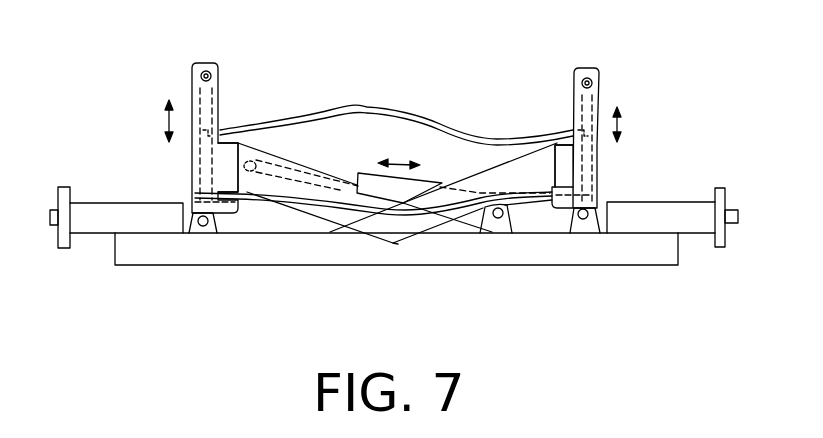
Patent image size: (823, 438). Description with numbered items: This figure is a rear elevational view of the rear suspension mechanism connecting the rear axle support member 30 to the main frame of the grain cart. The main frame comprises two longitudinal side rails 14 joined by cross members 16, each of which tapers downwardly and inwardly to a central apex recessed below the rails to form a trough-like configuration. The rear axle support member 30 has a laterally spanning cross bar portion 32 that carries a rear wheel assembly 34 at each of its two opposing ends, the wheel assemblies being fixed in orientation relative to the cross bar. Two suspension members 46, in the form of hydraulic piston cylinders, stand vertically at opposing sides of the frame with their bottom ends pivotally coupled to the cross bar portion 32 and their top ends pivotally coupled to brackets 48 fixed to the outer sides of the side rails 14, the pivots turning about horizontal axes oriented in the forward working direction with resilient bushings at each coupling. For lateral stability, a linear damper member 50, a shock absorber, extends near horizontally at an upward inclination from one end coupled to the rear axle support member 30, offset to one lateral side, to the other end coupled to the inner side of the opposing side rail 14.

The side rails 14 is at (232, 162).
The cross members 16 is at (508, 163).
The rear axle support member 30 is at (392, 264).
The cross bar portion 32 is at (291, 266).
The rear wheel assembly 34 is at (97, 220).
The suspension members 46 is at (208, 174).
The brackets 48 is at (218, 93).
The linear damper member 50 is at (418, 185).